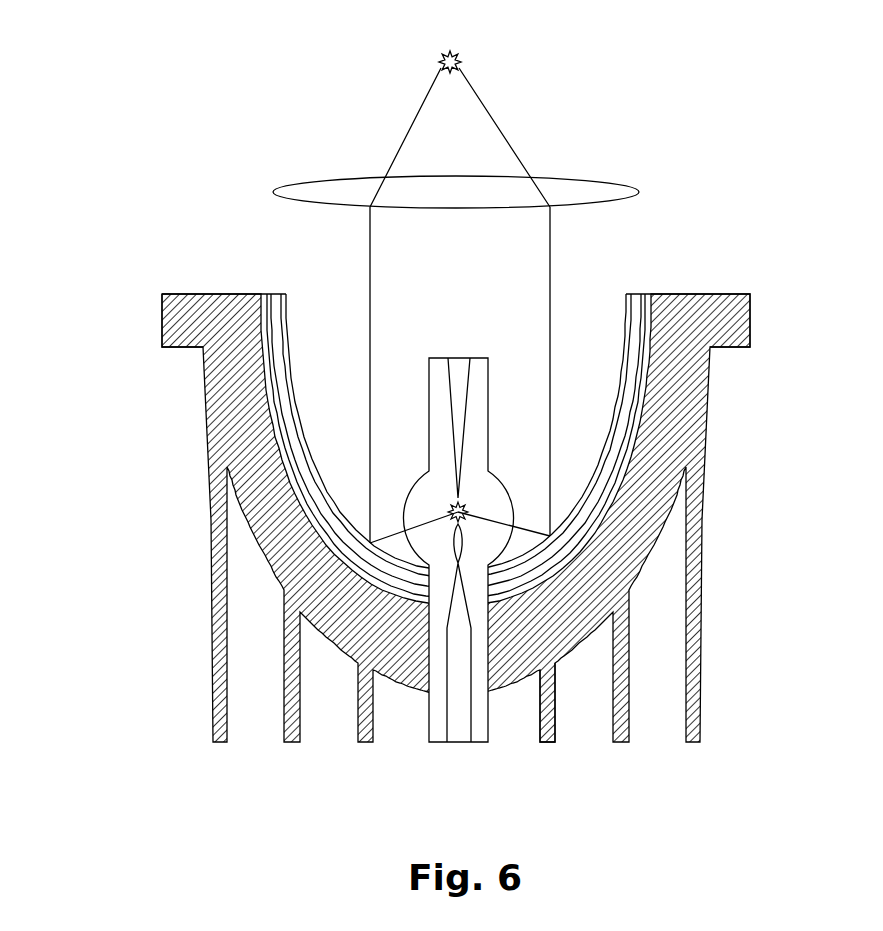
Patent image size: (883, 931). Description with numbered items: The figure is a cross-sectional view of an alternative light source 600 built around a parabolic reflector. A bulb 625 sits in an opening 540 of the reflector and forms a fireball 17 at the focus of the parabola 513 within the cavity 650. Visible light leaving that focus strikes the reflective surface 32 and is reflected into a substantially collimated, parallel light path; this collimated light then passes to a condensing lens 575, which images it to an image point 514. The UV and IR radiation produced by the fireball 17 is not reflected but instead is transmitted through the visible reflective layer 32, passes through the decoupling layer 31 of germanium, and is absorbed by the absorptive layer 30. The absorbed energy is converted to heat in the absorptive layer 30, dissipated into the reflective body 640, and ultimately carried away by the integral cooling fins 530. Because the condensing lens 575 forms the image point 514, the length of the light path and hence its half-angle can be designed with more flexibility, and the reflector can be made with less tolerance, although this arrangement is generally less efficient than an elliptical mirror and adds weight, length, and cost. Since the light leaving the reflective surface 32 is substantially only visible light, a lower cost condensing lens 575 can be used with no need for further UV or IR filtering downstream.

The light source 600 is at (735, 168).
The absorptive layer 30 is at (650, 294).
The decoupling layer 31 is at (637, 294).
The reflective surface 32 is at (628, 294).
The parabola 513 is at (287, 343).
The image point 514 is at (460, 65).
The condensing lens 575 is at (588, 178).
The bulb 625 is at (488, 412).
The fireball 17 is at (467, 507).
The opening 540 is at (427, 692).
The cooling fins 530 is at (553, 742).
The reflective body 640 is at (175, 320).
The cavity 650 is at (434, 375).